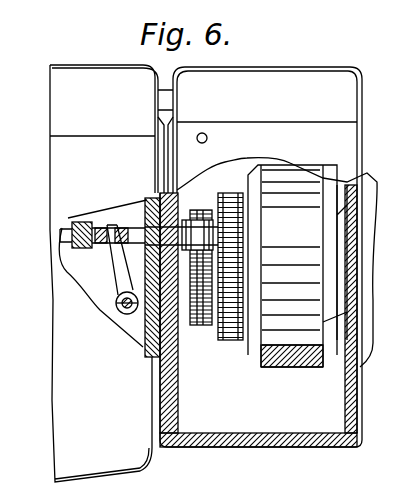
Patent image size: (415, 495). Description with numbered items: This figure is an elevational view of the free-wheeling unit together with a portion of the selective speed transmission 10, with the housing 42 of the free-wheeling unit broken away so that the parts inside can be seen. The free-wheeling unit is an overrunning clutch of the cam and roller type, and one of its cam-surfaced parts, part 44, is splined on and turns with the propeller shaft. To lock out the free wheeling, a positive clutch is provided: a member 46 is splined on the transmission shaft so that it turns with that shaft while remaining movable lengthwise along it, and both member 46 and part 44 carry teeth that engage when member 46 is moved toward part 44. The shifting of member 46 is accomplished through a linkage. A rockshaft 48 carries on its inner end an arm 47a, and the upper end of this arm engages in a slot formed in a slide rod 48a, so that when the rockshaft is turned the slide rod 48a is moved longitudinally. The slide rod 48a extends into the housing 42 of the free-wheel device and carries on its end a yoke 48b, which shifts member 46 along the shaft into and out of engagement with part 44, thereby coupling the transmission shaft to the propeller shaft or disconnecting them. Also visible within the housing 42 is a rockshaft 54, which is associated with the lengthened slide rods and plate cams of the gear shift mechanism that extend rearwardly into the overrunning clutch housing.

The selective speed transmission 10 is at (58, 163).
The housing 42 is at (345, 142).
The cam part 44 is at (302, 358).
The member 46 is at (233, 340).
The arm 47a is at (120, 278).
The rockshaft 48 is at (118, 309).
The slide rod 48a is at (133, 237).
The yoke 48b is at (205, 318).
The rockshaft 54 is at (207, 139).